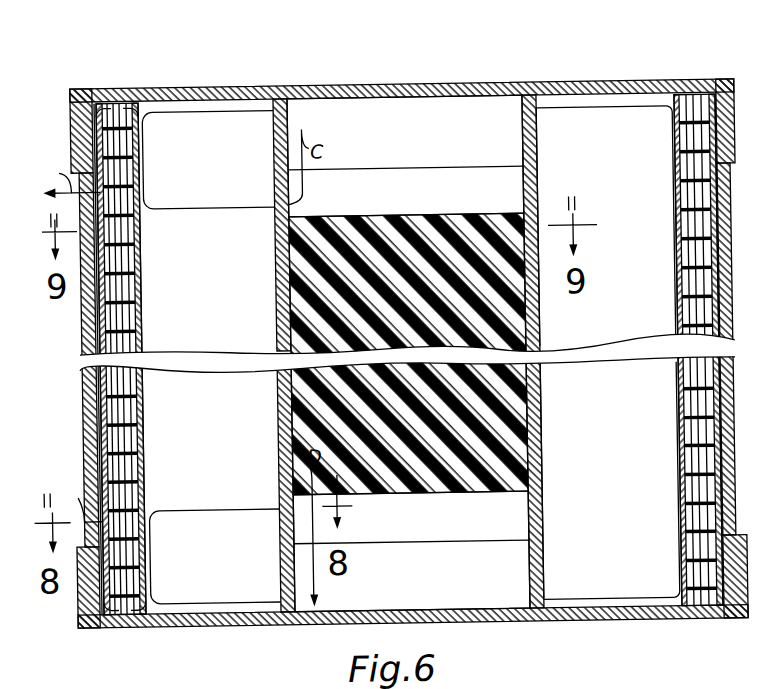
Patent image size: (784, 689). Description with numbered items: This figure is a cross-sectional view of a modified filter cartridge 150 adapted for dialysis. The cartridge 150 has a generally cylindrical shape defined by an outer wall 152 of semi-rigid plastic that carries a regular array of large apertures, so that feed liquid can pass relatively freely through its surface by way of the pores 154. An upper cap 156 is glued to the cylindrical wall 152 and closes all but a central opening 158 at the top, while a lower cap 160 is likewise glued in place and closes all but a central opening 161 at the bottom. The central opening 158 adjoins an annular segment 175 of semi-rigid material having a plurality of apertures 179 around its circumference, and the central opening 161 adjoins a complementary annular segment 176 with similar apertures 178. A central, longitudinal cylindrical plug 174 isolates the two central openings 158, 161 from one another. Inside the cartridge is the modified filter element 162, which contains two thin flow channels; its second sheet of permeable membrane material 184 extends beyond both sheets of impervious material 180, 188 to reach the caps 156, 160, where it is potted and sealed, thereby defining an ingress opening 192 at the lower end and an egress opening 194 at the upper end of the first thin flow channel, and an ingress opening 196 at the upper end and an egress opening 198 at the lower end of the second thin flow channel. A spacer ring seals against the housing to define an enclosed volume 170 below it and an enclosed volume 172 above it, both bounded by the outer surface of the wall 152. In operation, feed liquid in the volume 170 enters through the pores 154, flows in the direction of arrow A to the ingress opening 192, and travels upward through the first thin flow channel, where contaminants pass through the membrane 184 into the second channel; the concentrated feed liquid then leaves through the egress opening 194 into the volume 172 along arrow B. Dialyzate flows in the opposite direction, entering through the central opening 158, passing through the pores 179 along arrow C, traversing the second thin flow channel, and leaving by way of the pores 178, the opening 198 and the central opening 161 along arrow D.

The filter cartridge 150 is at (392, 70).
The outer wall 152 is at (89, 382).
The pores 154 is at (89, 398).
The upper cap 156 is at (274, 81).
The central opening 158 is at (477, 99).
The lower cap 160 is at (271, 618).
The central opening 161 is at (456, 591).
The filter element 162 is at (102, 223).
The enclosed volume 170 is at (62, 486).
The enclosed volume 172 is at (40, 165).
The plug 174 is at (407, 230).
The annular segment 175 is at (276, 175).
The annular segment 176 is at (280, 520).
The apertures 178 is at (288, 501).
The apertures 179 is at (275, 211).
The sheet of impervious material 180 is at (107, 333).
The sheet of permeable membrane material 184 is at (119, 281).
The sheet of impervious material 188 is at (133, 319).
The ingress opening 192 is at (103, 615).
The egress opening 194 is at (111, 99).
The ingress opening 196 is at (126, 106).
The egress opening 198 is at (138, 613).